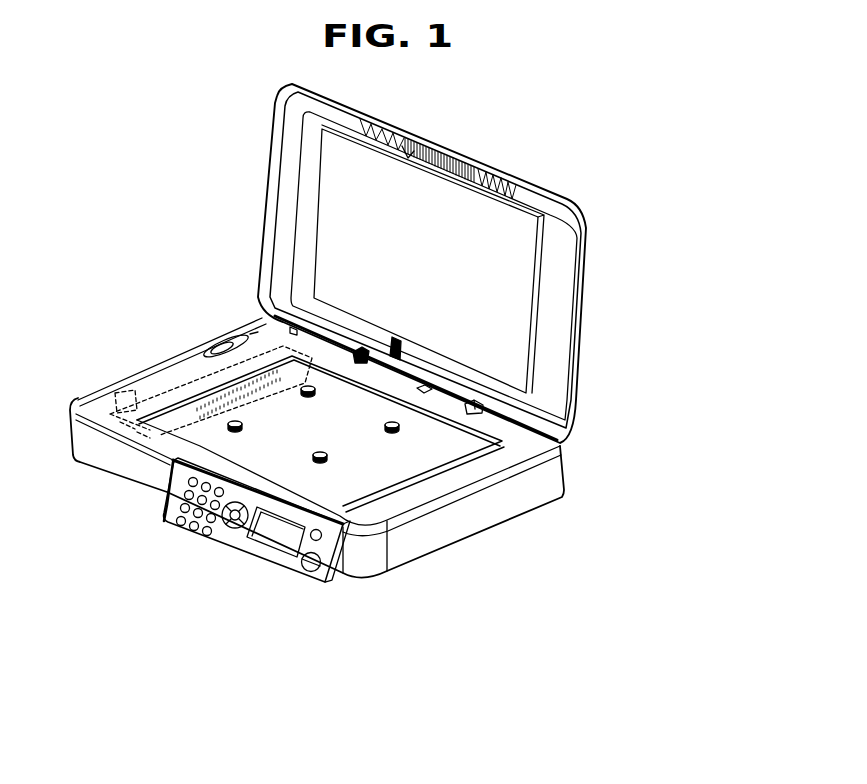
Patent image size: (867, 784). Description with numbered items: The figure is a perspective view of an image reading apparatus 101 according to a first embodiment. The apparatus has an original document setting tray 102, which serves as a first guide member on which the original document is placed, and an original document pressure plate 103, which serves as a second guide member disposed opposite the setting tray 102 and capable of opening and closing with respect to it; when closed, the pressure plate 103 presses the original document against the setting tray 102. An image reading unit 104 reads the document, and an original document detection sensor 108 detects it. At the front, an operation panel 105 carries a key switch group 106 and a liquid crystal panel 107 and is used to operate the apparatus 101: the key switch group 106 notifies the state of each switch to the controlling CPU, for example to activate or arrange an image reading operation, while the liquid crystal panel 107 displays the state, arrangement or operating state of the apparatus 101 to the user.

The image reading apparatus 101 is at (523, 490).
The original document setting tray 102 is at (380, 472).
The original document pressure plate 103 is at (505, 312).
The image reading unit 104 is at (197, 377).
The operation panel 105 is at (173, 505).
The key switch group 106 is at (303, 563).
The liquid crystal panel 107 is at (273, 538).
The original document detection sensor 108 is at (300, 393).